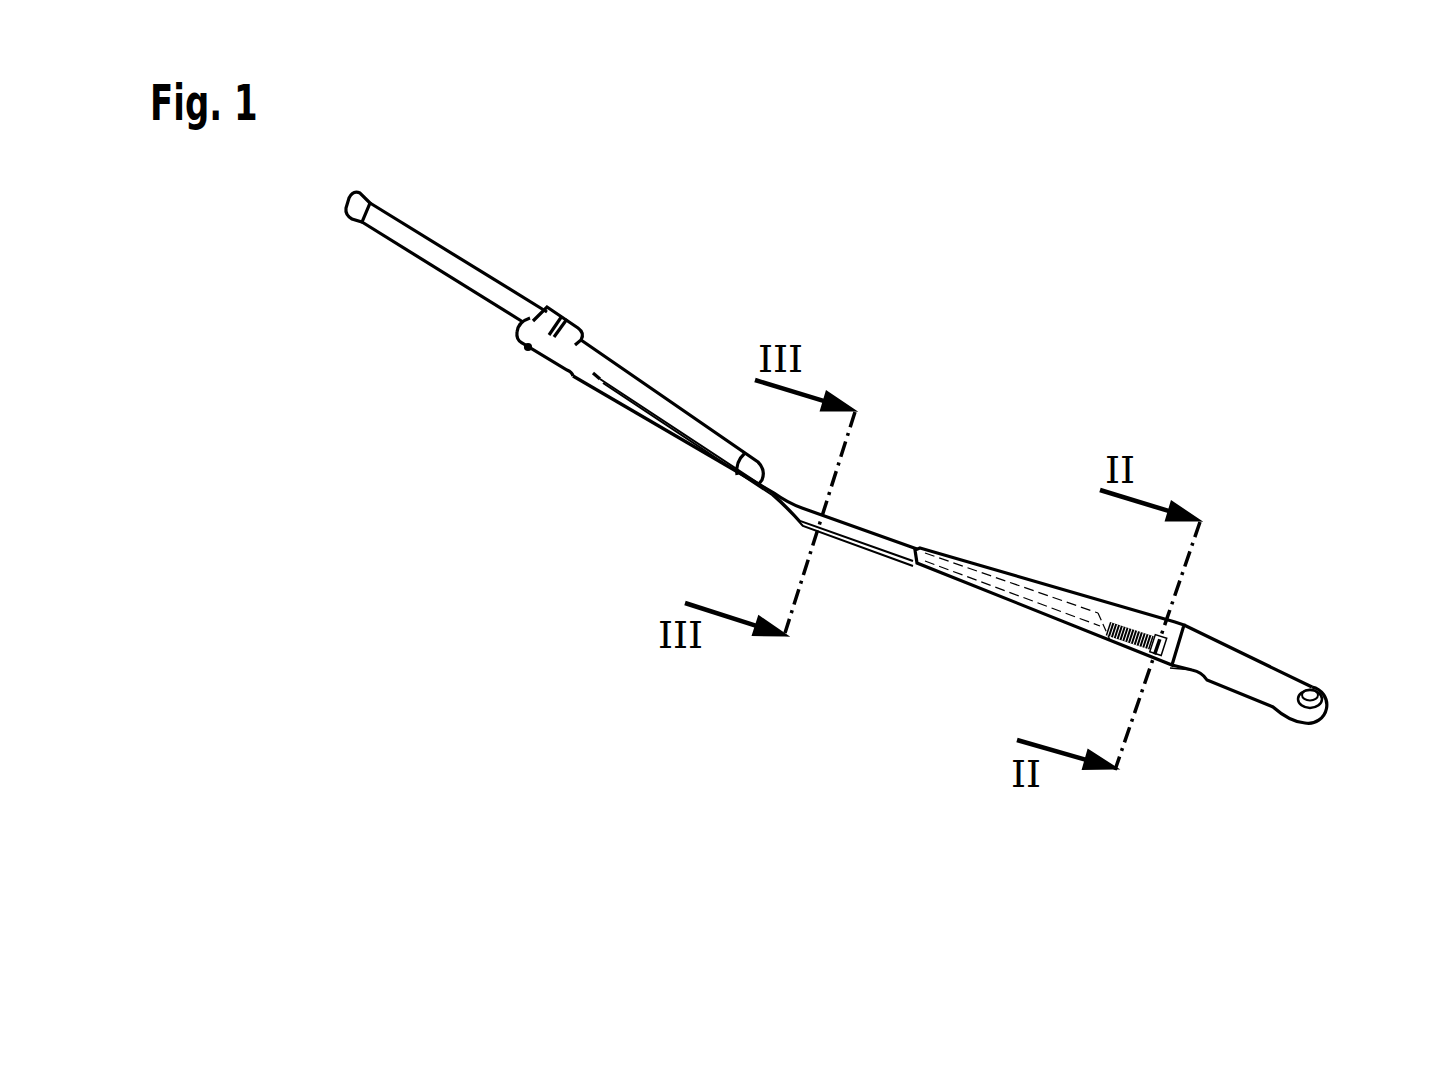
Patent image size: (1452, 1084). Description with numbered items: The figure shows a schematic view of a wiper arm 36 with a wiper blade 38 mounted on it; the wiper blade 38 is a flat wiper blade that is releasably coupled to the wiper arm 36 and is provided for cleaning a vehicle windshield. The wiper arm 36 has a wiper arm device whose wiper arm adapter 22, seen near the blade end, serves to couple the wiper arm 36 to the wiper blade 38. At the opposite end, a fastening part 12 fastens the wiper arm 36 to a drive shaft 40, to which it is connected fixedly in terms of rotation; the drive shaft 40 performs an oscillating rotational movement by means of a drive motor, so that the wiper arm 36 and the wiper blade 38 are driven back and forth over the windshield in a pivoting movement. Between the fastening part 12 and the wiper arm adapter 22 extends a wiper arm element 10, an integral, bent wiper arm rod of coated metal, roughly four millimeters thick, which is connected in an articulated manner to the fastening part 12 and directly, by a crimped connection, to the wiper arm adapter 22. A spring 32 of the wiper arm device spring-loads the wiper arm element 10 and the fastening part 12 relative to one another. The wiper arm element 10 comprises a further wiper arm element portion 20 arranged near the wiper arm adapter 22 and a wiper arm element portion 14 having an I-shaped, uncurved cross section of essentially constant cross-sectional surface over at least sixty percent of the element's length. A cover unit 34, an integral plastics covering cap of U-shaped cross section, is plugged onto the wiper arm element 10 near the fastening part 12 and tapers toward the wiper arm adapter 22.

The wiper arm element 10 is at (883, 457).
The fastening part 12 is at (1273, 656).
The wiper arm element portion 14 is at (866, 503).
The further wiper arm element portion 20 is at (643, 453).
The wiper arm adapter 22 is at (519, 374).
The spring 32 is at (1132, 601).
The cover unit 34 is at (986, 606).
The wiper arm 36 is at (1295, 616).
The wiper blade 38 is at (513, 245).
The drive shaft 40 is at (1341, 680).